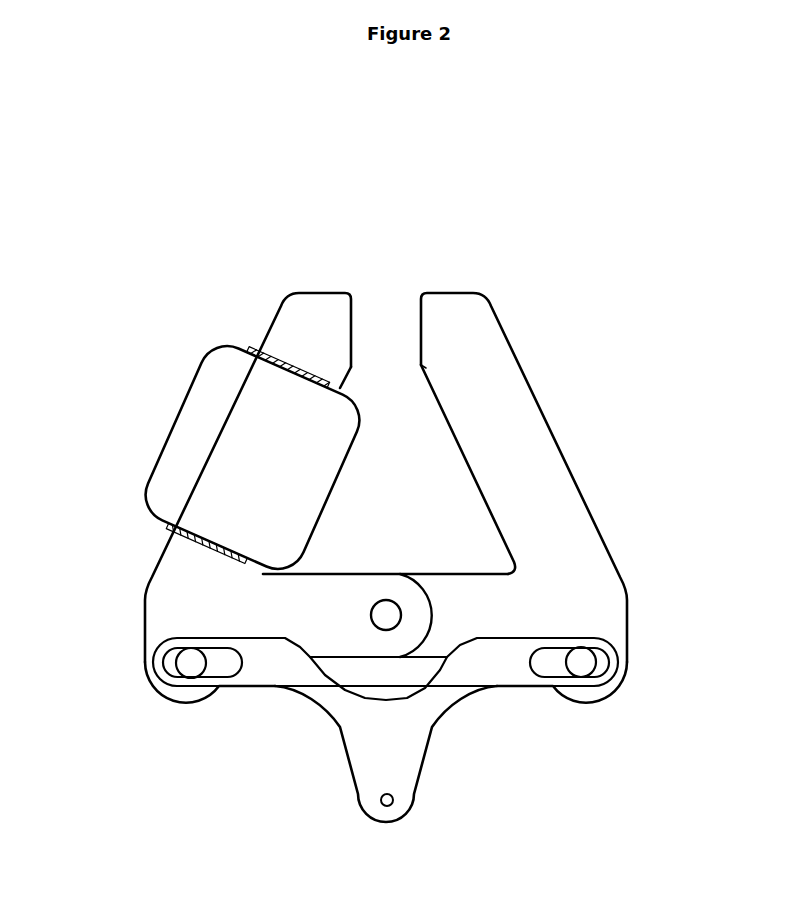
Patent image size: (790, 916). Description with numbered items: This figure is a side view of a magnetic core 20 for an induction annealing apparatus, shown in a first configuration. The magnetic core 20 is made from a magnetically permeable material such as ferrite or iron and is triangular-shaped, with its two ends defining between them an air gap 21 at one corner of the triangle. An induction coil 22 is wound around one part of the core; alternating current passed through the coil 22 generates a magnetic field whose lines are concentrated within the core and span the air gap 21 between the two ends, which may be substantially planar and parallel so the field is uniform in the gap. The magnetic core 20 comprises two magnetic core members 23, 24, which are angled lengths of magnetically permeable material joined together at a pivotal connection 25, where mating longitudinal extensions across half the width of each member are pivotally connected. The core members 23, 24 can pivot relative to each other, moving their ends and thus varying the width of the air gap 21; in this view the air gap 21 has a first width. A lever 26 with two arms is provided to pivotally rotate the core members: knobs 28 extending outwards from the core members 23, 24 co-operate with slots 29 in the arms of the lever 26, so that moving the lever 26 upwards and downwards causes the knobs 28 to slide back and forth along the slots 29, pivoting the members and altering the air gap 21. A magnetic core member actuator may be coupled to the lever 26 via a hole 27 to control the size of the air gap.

The magnetic core 20 is at (128, 232).
The air gap 21 is at (380, 330).
The induction coil 22 is at (210, 438).
The magnetic core member 23 is at (193, 595).
The magnetic core member 24 is at (513, 429).
The pivotal connection 25 is at (395, 628).
The lever 26 is at (368, 728).
The hole 27 is at (390, 803).
The knobs 28 is at (193, 663).
The slots 29 is at (227, 663).